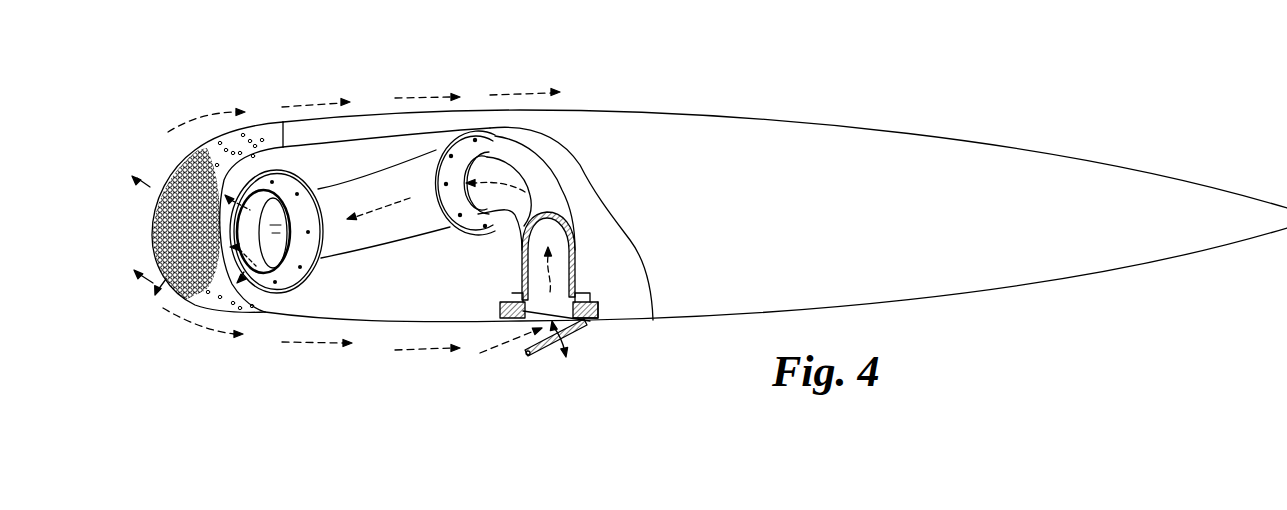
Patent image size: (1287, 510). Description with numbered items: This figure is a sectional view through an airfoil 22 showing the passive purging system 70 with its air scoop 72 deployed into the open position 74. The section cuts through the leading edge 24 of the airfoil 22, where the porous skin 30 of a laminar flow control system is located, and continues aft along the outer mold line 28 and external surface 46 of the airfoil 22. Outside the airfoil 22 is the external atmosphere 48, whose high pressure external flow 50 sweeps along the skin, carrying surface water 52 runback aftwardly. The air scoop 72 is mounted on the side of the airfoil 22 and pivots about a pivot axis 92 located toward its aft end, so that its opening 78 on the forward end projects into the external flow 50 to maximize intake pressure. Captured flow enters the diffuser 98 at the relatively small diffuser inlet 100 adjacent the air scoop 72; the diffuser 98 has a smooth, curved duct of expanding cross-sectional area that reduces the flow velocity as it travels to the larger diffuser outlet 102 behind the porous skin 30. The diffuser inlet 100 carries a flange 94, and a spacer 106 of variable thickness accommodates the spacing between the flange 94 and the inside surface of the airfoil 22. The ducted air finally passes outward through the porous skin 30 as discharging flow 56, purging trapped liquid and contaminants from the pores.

The airfoil 22 is at (738, 113).
The leading edge 24 is at (153, 222).
The outer mold line 28 is at (477, 112).
The porous skin 30 is at (153, 202).
The external surface 46 is at (708, 323).
The external atmosphere 48 is at (190, 88).
The external flow 50 is at (172, 128).
The surface water 52 is at (267, 123).
The discharging flow 56 is at (158, 157).
The purging system 70 is at (620, 362).
The air scoop 72 is at (528, 356).
The open position 74 is at (540, 358).
The opening 78 is at (530, 335).
The pivot axis 92 is at (590, 327).
The flange 94 is at (492, 139).
The diffuser 98 is at (547, 163).
The diffuser inlet 100 is at (556, 296).
The diffuser outlet 102 is at (288, 247).
The spacer 106 is at (618, 325).